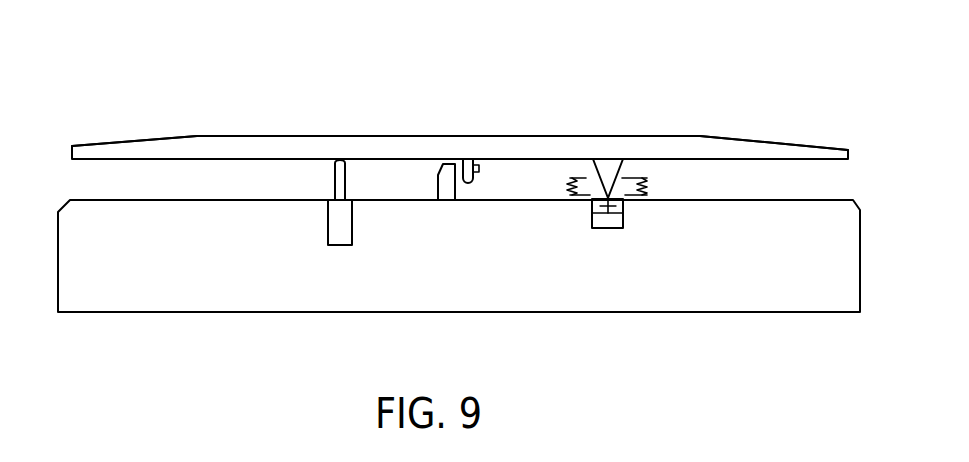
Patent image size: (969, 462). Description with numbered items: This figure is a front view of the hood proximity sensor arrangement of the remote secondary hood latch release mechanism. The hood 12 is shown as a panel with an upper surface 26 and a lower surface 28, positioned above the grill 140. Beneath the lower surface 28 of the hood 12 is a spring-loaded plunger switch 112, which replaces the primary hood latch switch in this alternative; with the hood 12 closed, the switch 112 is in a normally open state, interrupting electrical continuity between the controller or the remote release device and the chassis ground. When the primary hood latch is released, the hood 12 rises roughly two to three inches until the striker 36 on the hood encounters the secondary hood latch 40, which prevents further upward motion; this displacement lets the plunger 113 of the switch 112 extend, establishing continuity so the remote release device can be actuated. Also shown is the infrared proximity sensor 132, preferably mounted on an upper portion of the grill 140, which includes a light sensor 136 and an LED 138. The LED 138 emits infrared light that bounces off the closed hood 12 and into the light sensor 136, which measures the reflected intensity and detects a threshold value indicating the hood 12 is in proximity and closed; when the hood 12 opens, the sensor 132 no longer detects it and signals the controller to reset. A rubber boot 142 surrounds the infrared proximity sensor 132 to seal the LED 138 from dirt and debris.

The hood 12 is at (728, 150).
The upper surface 26 is at (798, 142).
The lower surface 28 is at (115, 160).
The striker 36 is at (467, 162).
The secondary hood latch 40 is at (448, 190).
The spring-loaded plunger switch 112 is at (335, 231).
The plunger 113 is at (343, 180).
The infrared proximity sensor 132 is at (607, 222).
The light sensor 136 is at (593, 202).
The LED 138 is at (618, 205).
The grill 140 is at (815, 295).
The rubber boot 142 is at (648, 192).